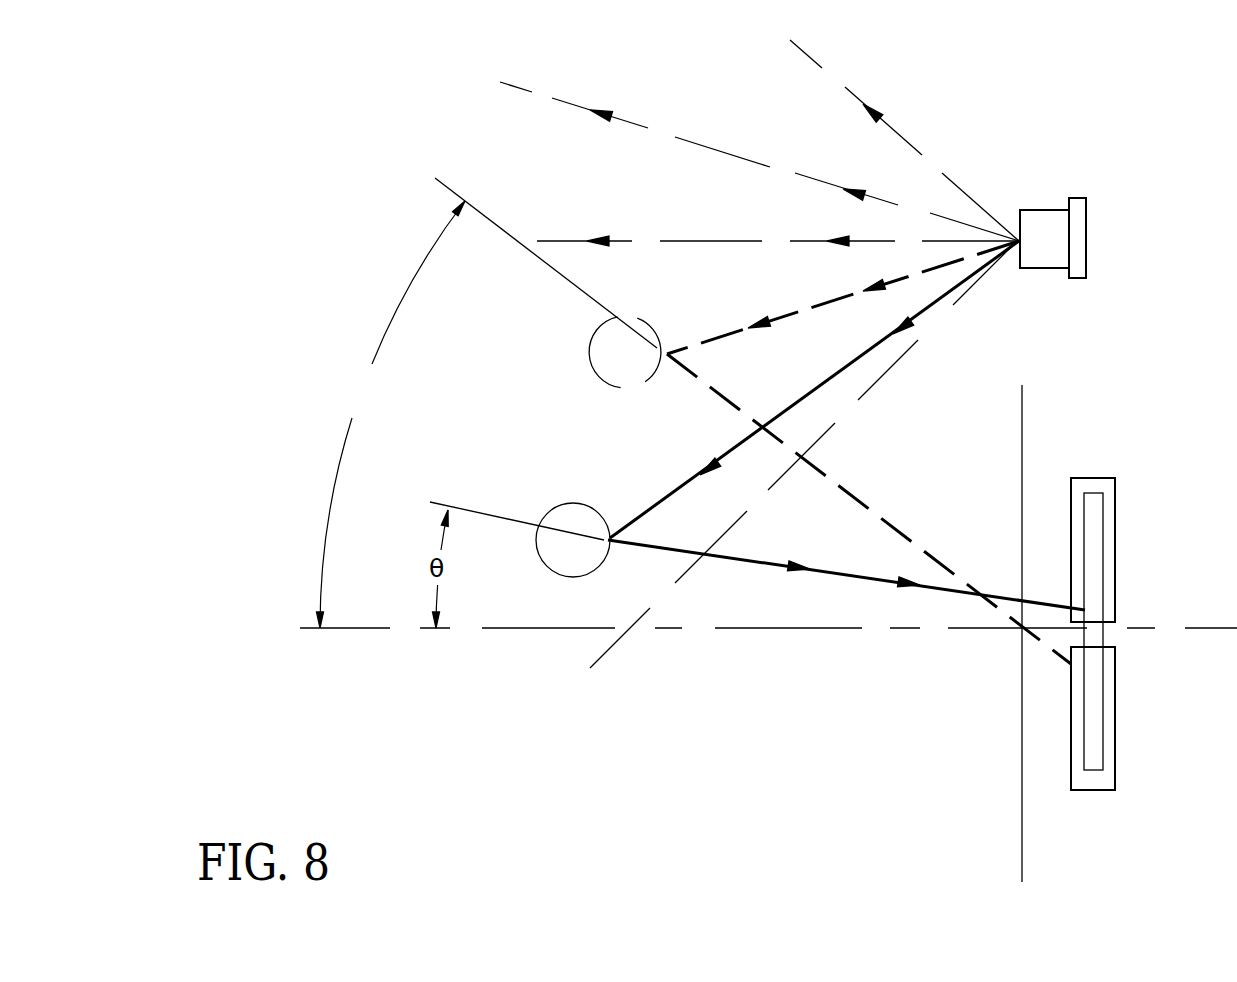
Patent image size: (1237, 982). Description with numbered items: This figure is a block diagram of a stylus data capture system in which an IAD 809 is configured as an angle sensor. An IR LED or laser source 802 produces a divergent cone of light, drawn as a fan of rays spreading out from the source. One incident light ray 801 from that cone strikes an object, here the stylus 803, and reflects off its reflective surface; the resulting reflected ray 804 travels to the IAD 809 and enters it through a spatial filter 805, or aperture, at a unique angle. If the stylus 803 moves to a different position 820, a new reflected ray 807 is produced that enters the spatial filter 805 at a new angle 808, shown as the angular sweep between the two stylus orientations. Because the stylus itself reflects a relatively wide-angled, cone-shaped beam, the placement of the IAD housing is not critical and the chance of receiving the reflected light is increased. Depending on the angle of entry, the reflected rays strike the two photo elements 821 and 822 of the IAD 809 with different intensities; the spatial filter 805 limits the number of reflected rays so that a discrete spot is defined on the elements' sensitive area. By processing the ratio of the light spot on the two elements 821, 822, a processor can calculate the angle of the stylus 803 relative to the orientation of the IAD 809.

The incident light ray 801 is at (845, 370).
The IR LED (or laser source) 802 is at (1086, 262).
The stylus 803 is at (576, 503).
The reflected ray 804 is at (847, 573).
The spatial filter 805 is at (1020, 614).
The new reflected ray 807 is at (922, 480).
The new angle 808 is at (391, 414).
The IAD 809 is at (1129, 647).
The different position 820 is at (592, 368).
The photo element 821 is at (1115, 515).
The photo element 822 is at (1115, 685).